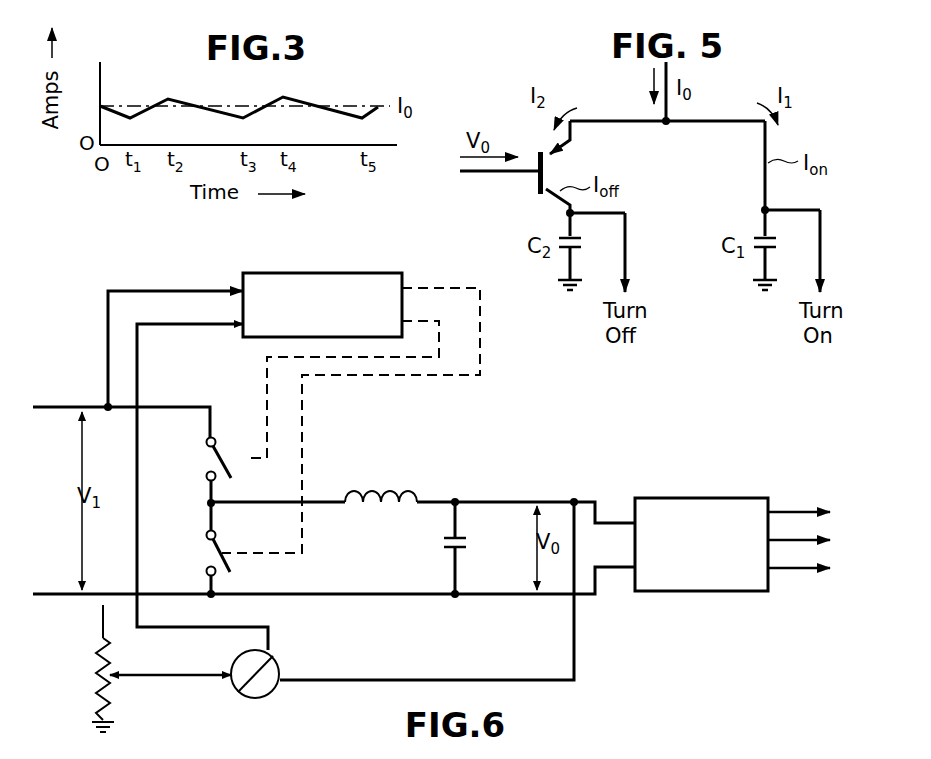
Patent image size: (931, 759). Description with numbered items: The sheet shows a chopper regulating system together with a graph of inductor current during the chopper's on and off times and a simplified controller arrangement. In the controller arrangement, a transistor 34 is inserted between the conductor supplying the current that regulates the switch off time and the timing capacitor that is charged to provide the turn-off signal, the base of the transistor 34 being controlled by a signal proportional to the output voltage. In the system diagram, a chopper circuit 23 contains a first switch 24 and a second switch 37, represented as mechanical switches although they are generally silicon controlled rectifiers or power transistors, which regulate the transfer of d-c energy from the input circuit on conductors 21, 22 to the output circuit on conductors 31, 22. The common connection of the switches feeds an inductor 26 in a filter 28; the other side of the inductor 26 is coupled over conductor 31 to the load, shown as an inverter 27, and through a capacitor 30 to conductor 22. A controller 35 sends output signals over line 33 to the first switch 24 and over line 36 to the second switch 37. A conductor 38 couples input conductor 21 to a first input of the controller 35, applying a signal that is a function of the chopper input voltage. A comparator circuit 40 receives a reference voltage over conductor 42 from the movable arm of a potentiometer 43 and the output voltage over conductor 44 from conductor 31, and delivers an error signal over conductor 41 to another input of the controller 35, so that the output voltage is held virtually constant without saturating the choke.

In FIG. 6, the input conductor 21 is at (121, 410).
In FIG. 6, the conductor 22 is at (488, 612).
In FIG. 6, the chopper circuit 23 is at (180, 518).
In FIG. 6, the first switch 24 is at (213, 464).
In FIG. 6, the inductor 26 is at (333, 482).
In FIG. 6, the inverter 27 is at (732, 531).
In FIG. 6, the filter 28 is at (382, 562).
In FIG. 6, the capacitor 30 is at (470, 546).
In FIG. 6, the conductor 31 is at (495, 500).
In FIG. 6, the line 33 is at (264, 378).
In FIG. 5, the transistor 34 is at (558, 173).
In FIG. 6, the controller 35 is at (322, 291).
In FIG. 6, the line 36 is at (348, 378).
In FIG. 6, the second switch 37 is at (219, 560).
In FIG. 6, the conductor 38 is at (158, 349).
In FIG. 6, the comparator circuit 40 is at (255, 688).
In FIG. 6, the conductor 41 is at (268, 623).
In FIG. 6, the conductor 42 is at (152, 673).
In FIG. 6, the potentiometer 43 is at (100, 699).
In FIG. 6, the conductor 44 is at (373, 681).